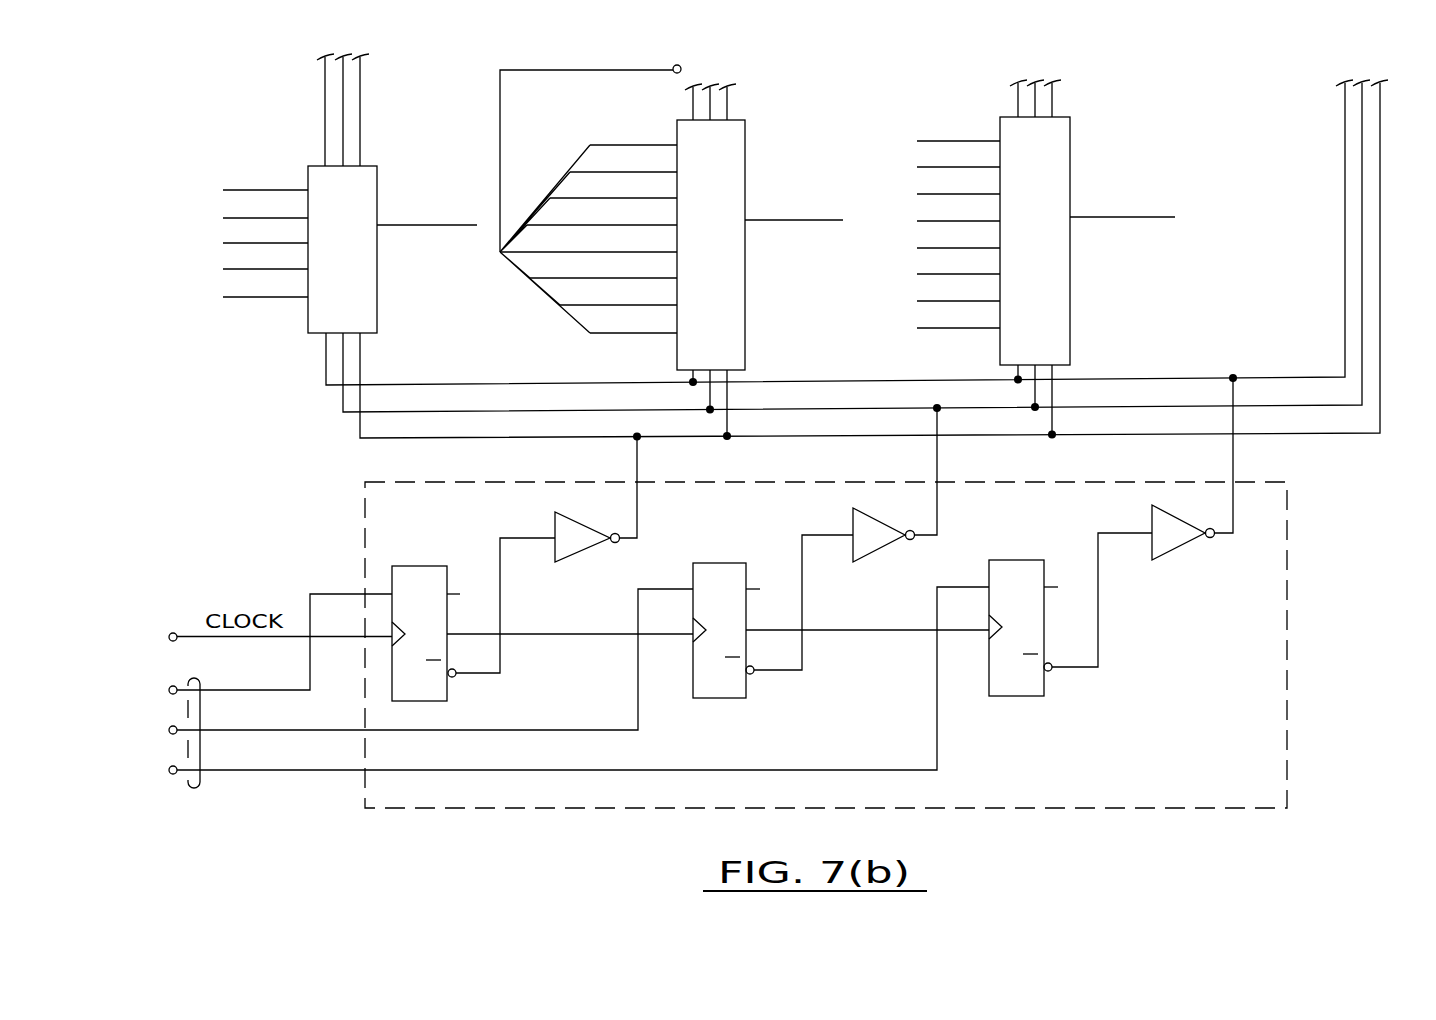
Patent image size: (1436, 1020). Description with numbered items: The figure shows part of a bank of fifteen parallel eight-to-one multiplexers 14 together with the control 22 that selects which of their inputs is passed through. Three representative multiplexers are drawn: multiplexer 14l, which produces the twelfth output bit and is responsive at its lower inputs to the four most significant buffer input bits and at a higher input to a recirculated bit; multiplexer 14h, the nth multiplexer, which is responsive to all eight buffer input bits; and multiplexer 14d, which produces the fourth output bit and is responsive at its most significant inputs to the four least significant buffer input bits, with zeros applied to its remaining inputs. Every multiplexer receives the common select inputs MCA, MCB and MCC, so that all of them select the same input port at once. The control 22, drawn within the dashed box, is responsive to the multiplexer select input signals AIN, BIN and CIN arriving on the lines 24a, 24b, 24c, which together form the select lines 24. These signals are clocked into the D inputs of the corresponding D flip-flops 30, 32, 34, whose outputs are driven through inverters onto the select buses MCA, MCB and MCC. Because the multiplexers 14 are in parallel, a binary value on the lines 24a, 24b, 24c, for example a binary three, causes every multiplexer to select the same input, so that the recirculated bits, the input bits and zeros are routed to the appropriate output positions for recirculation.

The multiplexers 14 is at (321, 443).
The multiplexer M 12 14l is at (377, 301).
The multiplexer M 8 14h is at (746, 333).
The multiplexer M 4 14d is at (1071, 330).
The control 22 is at (1287, 600).
The select lines 24 is at (186, 788).
The select line 24a is at (284, 692).
The select line 24b is at (284, 732).
The select line 24c is at (284, 772).
The D flip-flop 30 is at (423, 566).
The D flip-flop 32 is at (724, 563).
The D flip-flop 34 is at (1020, 560).